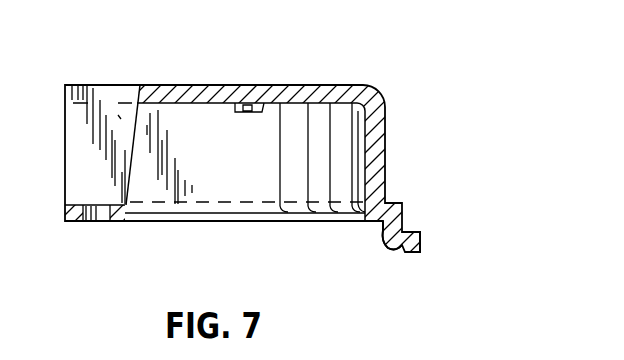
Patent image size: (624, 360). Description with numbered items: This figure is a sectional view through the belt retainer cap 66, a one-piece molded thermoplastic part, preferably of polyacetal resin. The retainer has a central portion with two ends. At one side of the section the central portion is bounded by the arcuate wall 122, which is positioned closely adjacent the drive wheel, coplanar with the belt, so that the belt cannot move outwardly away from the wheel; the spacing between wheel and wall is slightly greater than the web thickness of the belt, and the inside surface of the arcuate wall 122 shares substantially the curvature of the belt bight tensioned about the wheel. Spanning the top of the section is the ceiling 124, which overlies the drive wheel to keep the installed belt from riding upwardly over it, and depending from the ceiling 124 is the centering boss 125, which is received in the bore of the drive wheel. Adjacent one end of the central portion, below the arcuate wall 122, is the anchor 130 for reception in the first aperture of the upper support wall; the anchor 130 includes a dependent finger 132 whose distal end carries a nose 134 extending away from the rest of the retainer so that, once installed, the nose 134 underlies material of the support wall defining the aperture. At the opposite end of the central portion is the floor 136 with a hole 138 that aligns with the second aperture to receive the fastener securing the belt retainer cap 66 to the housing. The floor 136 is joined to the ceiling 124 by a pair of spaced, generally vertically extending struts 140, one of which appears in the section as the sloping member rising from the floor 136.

The belt retainer cap 66 is at (0, 25).
The arcuate wall 122 is at (386, 123).
The ceiling 124 is at (182, 85).
The centering boss 125 is at (296, 85).
The anchor 130 is at (381, 254).
The dependent finger 132 is at (390, 229).
The nose 134 is at (412, 253).
The floor 136 is at (75, 222).
The hole 138 is at (97, 222).
The struts 140 is at (82, 142).